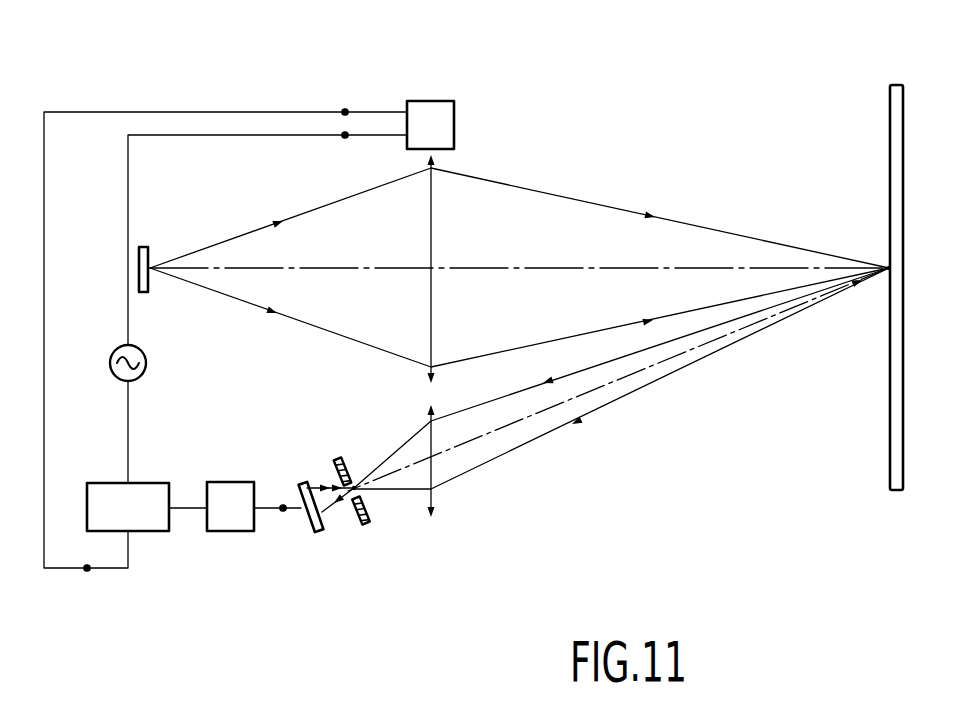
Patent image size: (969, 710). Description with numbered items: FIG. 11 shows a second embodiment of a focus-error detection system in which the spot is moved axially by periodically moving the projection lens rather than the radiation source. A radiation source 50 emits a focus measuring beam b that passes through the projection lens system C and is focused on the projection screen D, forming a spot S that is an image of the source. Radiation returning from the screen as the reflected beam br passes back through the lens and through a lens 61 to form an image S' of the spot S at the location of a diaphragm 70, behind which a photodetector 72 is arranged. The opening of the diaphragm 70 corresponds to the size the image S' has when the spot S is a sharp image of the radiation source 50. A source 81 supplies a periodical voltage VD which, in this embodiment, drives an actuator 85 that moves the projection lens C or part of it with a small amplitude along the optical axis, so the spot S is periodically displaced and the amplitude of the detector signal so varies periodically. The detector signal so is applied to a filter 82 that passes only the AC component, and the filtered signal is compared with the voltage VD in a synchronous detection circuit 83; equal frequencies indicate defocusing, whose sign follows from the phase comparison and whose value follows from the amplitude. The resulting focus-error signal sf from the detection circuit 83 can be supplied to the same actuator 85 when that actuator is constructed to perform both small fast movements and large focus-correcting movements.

The radiation source 50 is at (150, 288).
The lens 61 is at (432, 479).
The diaphragm 70 is at (367, 524).
The photodetector 72 is at (320, 534).
The source 81 is at (146, 363).
The filter 82 is at (232, 533).
The synchronous detection circuit 83 is at (155, 533).
The actuator 85 is at (431, 101).
The projection lens system C is at (432, 195).
The focus measuring beam b is at (585, 227).
The reflected beam br is at (618, 398).
The projection screen D is at (886, 287).
The spot S is at (877, 296).
The image of the spot S' is at (340, 476).
The focus-error signal sf is at (87, 580).
The detector signal so is at (280, 533).
The periodical voltage VD is at (110, 363).